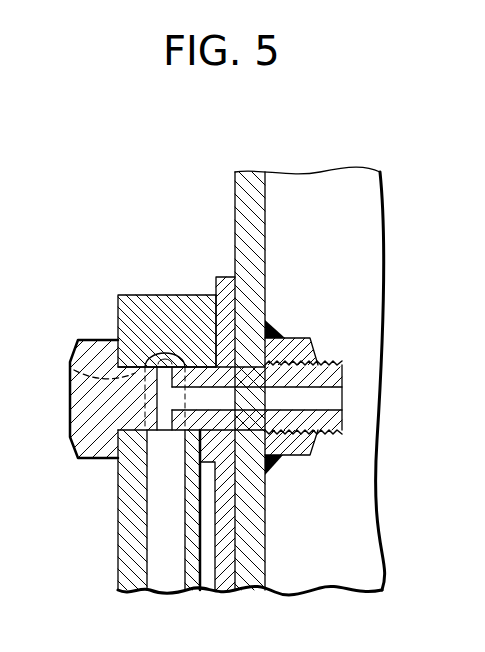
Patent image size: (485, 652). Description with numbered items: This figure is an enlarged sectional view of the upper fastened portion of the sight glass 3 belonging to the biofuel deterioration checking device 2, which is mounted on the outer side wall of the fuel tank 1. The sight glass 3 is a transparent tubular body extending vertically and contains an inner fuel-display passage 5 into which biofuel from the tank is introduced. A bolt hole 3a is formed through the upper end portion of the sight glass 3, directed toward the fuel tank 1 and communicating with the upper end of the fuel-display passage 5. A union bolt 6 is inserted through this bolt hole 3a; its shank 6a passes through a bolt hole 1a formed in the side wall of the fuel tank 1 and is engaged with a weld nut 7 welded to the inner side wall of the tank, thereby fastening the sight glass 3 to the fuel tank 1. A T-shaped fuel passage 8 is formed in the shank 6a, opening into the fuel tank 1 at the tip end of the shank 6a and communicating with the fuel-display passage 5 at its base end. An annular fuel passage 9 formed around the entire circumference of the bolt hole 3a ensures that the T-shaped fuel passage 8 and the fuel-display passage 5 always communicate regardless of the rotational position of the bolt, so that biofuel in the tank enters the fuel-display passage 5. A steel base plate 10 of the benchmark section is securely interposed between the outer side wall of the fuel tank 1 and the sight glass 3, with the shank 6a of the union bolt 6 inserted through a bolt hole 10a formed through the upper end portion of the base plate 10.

The fuel tank 1 is at (300, 190).
The bolt hole 1a is at (310, 448).
The biofuel deterioration checking device 2 is at (95, 248).
The sight glass 3 is at (132, 306).
The bolt hole 3a is at (118, 372).
The fuel-display passage 5 is at (148, 503).
The union bolt 6 is at (86, 410).
The shank 6a is at (345, 372).
The weld nut 7 is at (306, 346).
The T-shaped fuel passage 8 is at (345, 408).
The annular fuel passage 9 is at (152, 352).
The base plate 10 is at (221, 279).
The bolt hole 10a is at (345, 392).